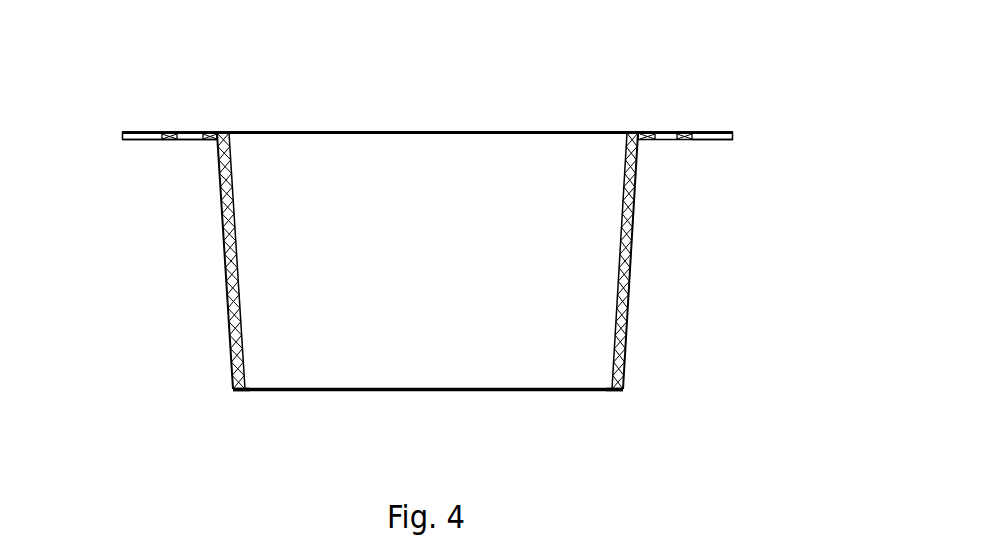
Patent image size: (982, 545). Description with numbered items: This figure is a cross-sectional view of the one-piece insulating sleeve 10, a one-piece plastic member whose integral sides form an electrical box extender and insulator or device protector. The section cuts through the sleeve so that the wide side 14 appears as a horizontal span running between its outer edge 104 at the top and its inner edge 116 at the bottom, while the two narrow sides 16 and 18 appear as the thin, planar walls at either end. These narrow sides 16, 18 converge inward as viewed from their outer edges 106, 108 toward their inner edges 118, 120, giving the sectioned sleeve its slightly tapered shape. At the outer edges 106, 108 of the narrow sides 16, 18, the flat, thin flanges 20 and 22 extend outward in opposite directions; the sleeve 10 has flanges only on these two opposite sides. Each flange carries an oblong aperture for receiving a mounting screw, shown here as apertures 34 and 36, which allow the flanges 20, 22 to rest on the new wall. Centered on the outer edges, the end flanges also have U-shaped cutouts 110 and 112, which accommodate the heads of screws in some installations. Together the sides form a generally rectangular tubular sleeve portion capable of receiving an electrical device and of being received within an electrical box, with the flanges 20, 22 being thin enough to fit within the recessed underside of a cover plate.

The one-piece insulating sleeve 10 is at (714, 257).
The wide side 14 is at (430, 260).
The narrow side 16 is at (225, 265).
The narrow side 18 is at (632, 263).
The flange 20 is at (165, 132).
The flange 22 is at (684, 140).
The aperture 34 is at (192, 132).
The aperture 36 is at (662, 131).
The outer edge 104 is at (428, 131).
The outer edge 106 is at (221, 131).
The outer edge 108 is at (633, 131).
The U-shaped cutout 110 is at (143, 141).
The U-shaped cutout 112 is at (707, 131).
The inner edge 116 is at (428, 392).
The inner edge 118 is at (235, 393).
The inner edge 120 is at (622, 392).